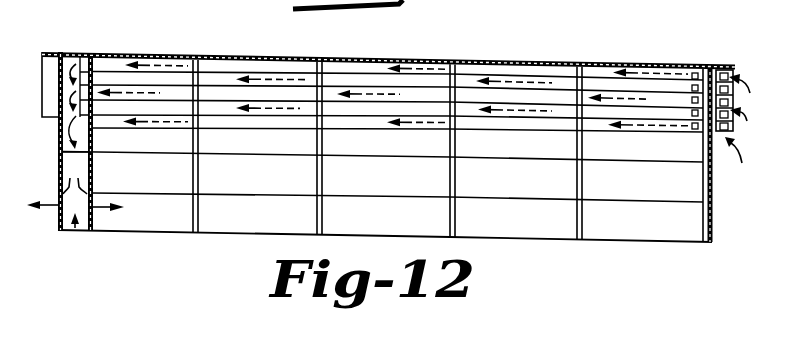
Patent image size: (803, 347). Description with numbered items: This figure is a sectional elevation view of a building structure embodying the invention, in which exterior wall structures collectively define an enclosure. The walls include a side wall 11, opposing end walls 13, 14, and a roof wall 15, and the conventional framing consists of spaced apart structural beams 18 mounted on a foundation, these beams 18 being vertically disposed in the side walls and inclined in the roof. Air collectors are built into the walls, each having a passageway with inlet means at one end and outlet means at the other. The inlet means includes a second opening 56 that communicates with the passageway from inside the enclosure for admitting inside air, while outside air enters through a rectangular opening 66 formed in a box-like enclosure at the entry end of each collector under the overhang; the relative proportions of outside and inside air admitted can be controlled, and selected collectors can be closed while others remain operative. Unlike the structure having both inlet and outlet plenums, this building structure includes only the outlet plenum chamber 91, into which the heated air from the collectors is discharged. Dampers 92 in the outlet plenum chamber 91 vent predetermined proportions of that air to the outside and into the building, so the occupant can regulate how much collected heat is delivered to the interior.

The side wall 11 is at (247, 243).
The end wall 13 is at (46, 154).
The end wall 14 is at (692, 217).
The roof wall 15 is at (240, 44).
The structural beams 18 is at (448, 143).
The second opening 56 is at (694, 72).
The rectangular opening 66 is at (725, 70).
The outlet plenum chamber 91 is at (75, 240).
The dampers 92 is at (62, 212).